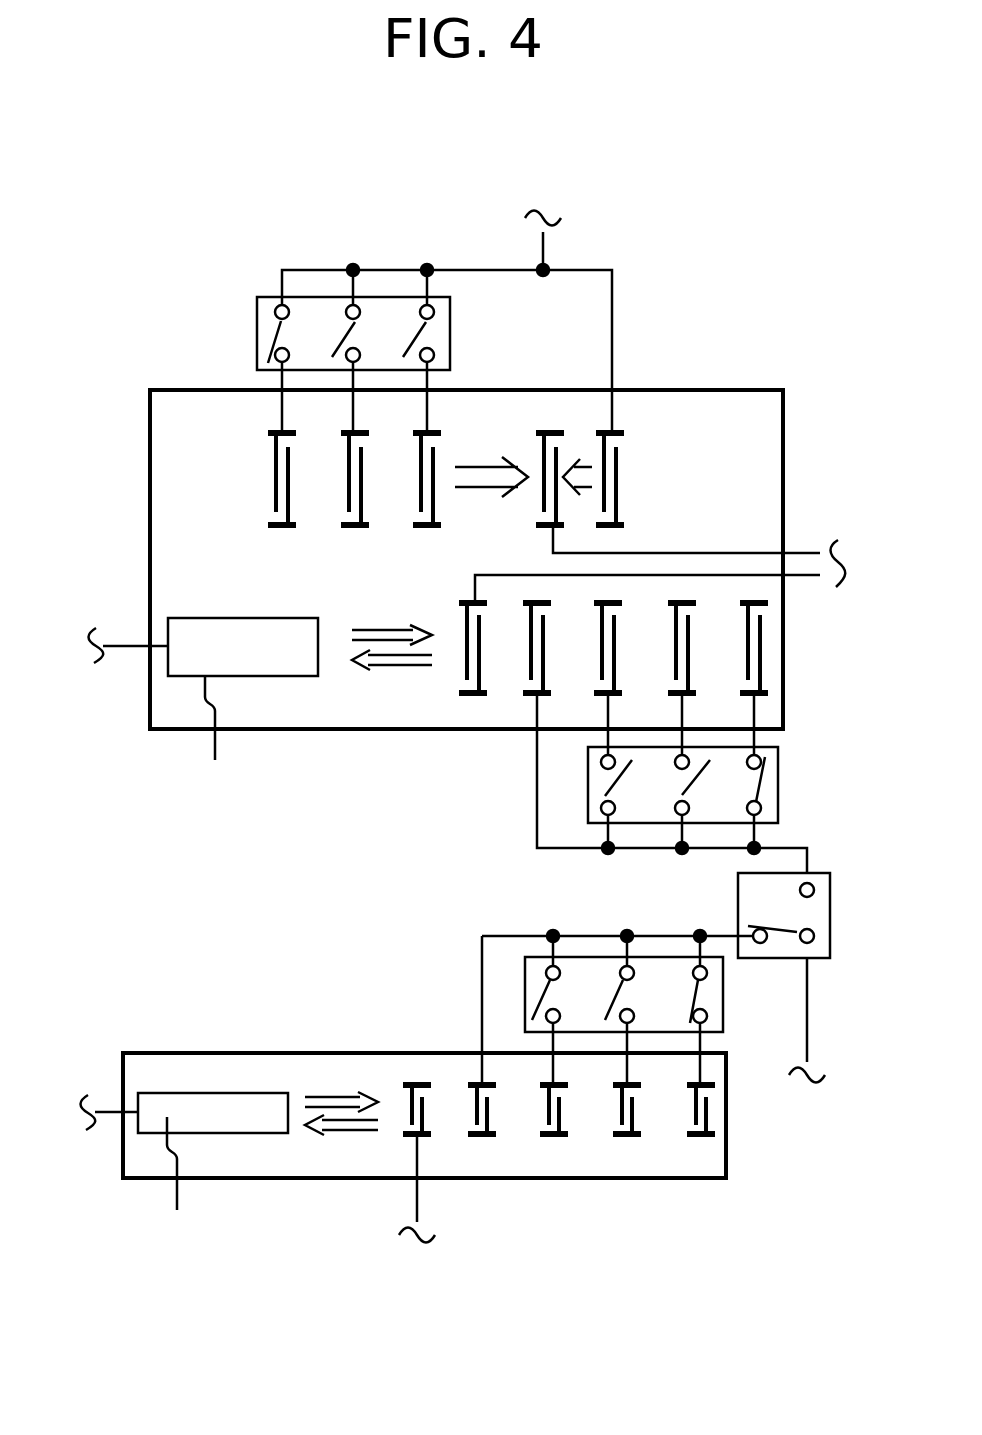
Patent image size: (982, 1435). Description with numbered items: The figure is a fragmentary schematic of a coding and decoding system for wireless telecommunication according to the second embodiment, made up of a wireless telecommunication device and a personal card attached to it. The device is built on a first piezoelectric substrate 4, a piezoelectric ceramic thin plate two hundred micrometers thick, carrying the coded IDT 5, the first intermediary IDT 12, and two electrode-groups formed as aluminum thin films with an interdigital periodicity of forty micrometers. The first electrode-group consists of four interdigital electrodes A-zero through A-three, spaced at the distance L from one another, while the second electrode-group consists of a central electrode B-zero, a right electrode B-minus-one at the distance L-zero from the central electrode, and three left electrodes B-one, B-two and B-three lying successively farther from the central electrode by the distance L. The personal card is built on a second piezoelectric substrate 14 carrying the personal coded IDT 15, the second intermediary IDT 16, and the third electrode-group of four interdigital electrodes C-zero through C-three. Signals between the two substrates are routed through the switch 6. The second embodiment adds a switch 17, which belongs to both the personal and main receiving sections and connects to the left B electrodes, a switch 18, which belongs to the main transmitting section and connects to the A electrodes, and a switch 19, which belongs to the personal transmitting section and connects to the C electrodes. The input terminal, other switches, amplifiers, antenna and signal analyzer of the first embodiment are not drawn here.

The first piezoelectric substrate 4 is at (748, 405).
The coded IDT 5 is at (224, 706).
The switch 6 is at (748, 895).
The first intermediary IDT 12 is at (593, 665).
The second piezoelectric substrate 14 is at (287, 1062).
The personal coded IDT 15 is at (185, 1189).
The second intermediary IDT 16 is at (400, 1162).
The switch 17 is at (257, 327).
The switch 18 is at (778, 786).
The switch 19 is at (723, 992).